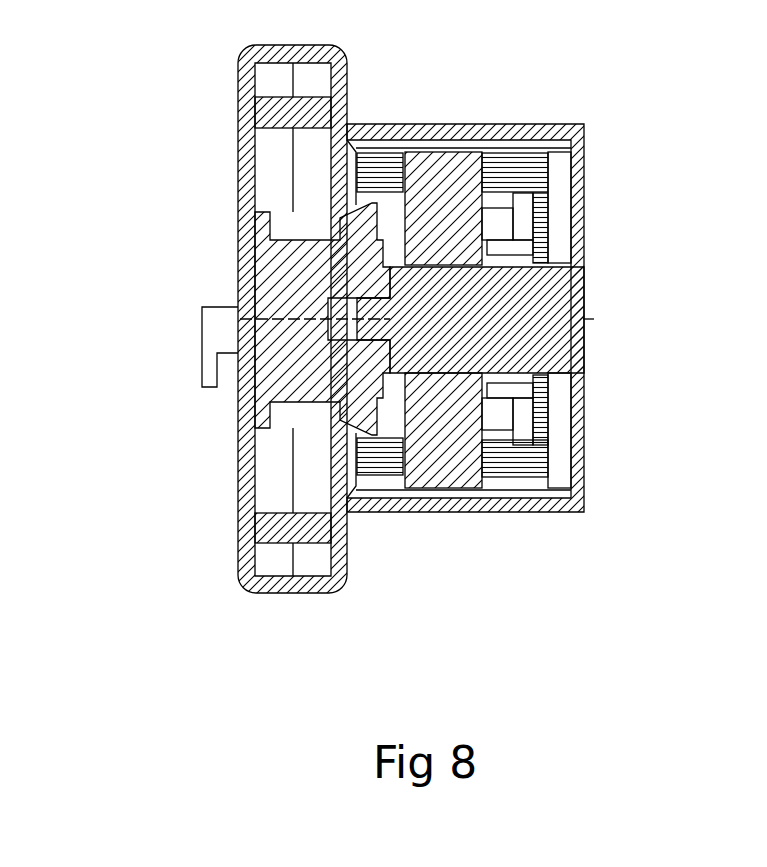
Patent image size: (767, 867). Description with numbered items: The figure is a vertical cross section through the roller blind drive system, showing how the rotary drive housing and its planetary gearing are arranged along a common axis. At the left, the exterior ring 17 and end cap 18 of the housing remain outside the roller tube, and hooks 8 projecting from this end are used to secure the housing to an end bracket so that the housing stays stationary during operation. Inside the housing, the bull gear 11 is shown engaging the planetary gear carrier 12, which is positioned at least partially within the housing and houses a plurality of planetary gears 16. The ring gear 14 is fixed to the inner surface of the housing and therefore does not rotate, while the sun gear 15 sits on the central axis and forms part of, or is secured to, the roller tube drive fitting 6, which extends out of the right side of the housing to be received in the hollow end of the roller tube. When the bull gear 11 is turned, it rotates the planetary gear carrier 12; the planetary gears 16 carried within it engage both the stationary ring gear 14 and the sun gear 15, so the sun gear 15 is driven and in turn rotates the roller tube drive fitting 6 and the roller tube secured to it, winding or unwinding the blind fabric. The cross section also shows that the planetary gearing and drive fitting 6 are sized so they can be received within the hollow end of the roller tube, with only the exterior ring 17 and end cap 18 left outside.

The roller tube drive fitting 6 is at (583, 285).
The hooks 8 is at (200, 383).
The bull gear 11 is at (300, 228).
The planetary gear carrier 12 is at (520, 215).
The ring gear 14 is at (540, 450).
The sun gear 15 is at (510, 352).
The planetary gears 16 is at (440, 165).
The exterior ring 17 is at (307, 595).
The end cap 18 is at (255, 528).